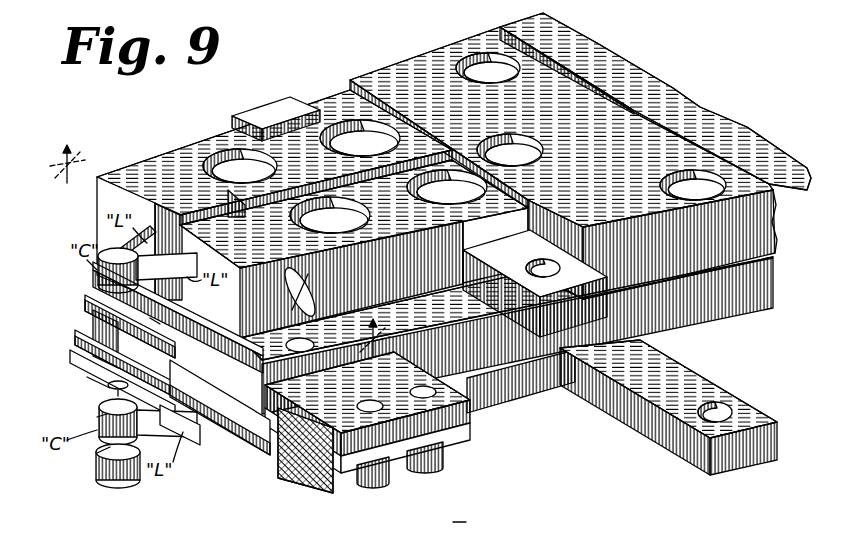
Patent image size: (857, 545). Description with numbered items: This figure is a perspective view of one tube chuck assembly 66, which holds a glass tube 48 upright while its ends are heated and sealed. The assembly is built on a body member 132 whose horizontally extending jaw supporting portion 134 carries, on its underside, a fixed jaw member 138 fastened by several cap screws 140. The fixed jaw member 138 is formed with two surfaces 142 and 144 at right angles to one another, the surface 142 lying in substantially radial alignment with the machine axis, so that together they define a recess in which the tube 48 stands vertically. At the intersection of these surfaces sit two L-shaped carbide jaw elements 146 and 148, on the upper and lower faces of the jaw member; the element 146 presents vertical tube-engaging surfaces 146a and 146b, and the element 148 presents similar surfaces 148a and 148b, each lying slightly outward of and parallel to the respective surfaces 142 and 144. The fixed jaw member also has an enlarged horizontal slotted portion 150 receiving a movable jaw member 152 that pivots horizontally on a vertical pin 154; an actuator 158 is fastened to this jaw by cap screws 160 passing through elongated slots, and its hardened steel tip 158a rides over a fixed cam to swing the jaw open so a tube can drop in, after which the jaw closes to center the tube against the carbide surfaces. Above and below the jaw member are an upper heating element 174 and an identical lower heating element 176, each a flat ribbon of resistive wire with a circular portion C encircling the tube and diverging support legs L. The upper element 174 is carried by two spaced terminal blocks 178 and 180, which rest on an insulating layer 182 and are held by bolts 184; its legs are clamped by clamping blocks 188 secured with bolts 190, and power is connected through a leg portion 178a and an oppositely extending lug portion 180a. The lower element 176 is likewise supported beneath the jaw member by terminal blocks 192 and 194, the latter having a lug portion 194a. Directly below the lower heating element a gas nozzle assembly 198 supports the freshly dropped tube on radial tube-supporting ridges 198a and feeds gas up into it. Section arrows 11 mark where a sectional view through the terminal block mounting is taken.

The body member 132 is at (703, 105).
The jaw supporting portion 134 is at (407, 77).
The cap screws 140 is at (481, 60).
The terminal block 178 is at (312, 200).
The leg portion 178a is at (257, 117).
The bolts 184 is at (357, 150).
The clamping blocks 188 is at (217, 203).
The terminal block 180 is at (620, 240).
The lug portion 180a is at (563, 257).
The insulating layer 182 is at (417, 288).
The bolts 190 is at (313, 293).
The fixed jaw member 138 is at (753, 303).
The vertical pin 154 is at (318, 348).
The section line 11 is at (234, 250).
The upper heating element 174 is at (130, 240).
The L-shaped jaw element 146 is at (90, 270).
The tube-engaging surface 146a is at (100, 297).
The tube-engaging surface 146b is at (153, 320).
The surface 142 is at (83, 337).
The L-shaped jaw element 148 is at (87, 363).
The tube-engaging surface 148a is at (87, 377).
The terminal block 192 is at (113, 383).
The tubes 48 is at (115, 400).
The tube-engaging surface 148b is at (97, 417).
The tube-supporting ridges 198a is at (97, 453).
The gas nozzle assembly 198 is at (97, 460).
The lower heating element 176 is at (183, 438).
The movable jaw member 152 is at (167, 423).
The surface 144 is at (243, 420).
The terminal block 194 is at (521, 428).
The lug portion 194a is at (733, 403).
The hardened steel tip 158a is at (303, 480).
The actuator 158 is at (340, 473).
The cap screws 160 is at (430, 467).
The tube chuck assembly 66 is at (458, 511).
The slotted portion 150 is at (533, 397).